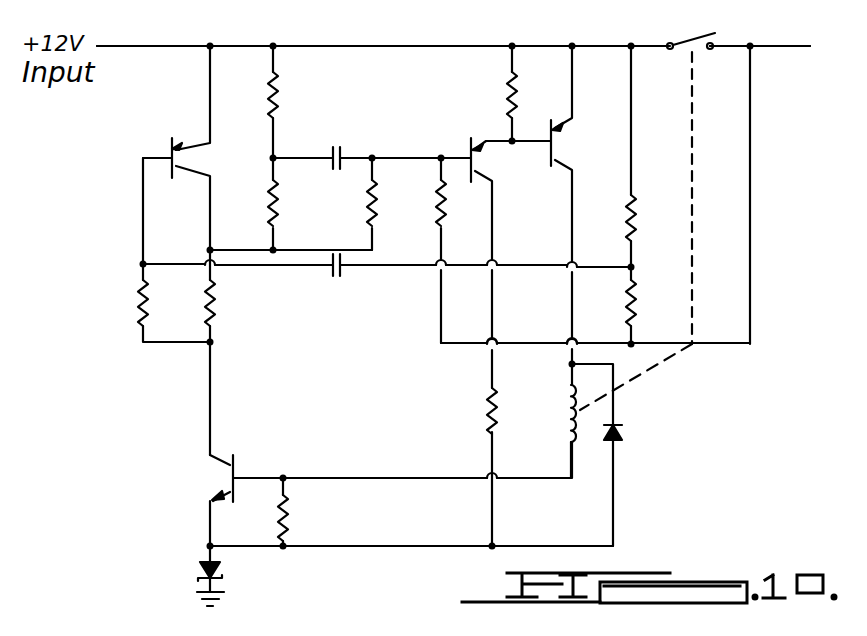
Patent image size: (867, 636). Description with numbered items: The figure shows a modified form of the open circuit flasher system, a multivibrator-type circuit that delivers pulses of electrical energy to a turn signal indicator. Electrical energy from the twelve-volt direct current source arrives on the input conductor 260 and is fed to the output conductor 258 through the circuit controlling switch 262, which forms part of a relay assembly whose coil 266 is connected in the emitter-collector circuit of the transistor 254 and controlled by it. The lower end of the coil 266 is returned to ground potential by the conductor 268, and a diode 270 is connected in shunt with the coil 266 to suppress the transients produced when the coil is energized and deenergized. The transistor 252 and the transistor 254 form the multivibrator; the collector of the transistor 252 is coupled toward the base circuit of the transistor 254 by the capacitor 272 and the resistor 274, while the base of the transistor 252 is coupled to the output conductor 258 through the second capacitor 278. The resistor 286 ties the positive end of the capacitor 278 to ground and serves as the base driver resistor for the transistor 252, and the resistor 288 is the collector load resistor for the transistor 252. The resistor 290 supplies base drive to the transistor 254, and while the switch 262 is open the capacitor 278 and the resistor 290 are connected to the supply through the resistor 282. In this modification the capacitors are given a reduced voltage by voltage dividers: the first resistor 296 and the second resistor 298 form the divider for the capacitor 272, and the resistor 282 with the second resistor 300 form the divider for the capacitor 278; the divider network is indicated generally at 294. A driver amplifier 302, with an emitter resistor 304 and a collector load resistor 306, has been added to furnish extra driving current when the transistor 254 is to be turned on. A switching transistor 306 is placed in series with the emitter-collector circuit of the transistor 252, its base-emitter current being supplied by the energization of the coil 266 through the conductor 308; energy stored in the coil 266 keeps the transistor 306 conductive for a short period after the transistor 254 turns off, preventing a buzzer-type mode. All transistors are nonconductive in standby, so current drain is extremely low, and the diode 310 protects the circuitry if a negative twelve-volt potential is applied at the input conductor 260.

The transistor 252 is at (190, 152).
The transistor 254 is at (557, 146).
The output conductor 258 is at (792, 50).
The input conductor 260 is at (155, 52).
The switch 262 is at (674, 58).
The coil 266 is at (555, 422).
The conductor 268 is at (198, 593).
The diode 270 is at (624, 432).
The capacitor 272 is at (337, 147).
The resistor 274 is at (367, 205).
The second capacitor 278 is at (337, 280).
The resistor 282 is at (632, 207).
The resistor 286 is at (138, 300).
The resistor 288 is at (216, 305).
The resistor 290 is at (436, 202).
The bias network 294 is at (455, 103).
The first resistor 296 is at (282, 100).
The second resistor 298 is at (280, 216).
The second resistor 300 is at (635, 306).
The driver amplifier 302 is at (478, 164).
The emitter resistor 304 is at (505, 85).
The switching transistor 306 is at (489, 400).
The conductor 308 is at (347, 478).
The diode 310 is at (203, 566).